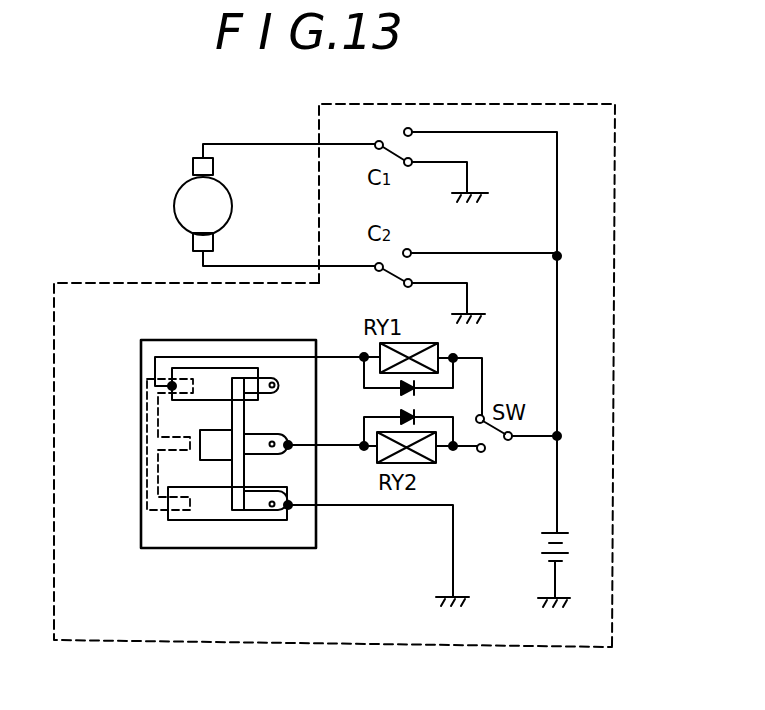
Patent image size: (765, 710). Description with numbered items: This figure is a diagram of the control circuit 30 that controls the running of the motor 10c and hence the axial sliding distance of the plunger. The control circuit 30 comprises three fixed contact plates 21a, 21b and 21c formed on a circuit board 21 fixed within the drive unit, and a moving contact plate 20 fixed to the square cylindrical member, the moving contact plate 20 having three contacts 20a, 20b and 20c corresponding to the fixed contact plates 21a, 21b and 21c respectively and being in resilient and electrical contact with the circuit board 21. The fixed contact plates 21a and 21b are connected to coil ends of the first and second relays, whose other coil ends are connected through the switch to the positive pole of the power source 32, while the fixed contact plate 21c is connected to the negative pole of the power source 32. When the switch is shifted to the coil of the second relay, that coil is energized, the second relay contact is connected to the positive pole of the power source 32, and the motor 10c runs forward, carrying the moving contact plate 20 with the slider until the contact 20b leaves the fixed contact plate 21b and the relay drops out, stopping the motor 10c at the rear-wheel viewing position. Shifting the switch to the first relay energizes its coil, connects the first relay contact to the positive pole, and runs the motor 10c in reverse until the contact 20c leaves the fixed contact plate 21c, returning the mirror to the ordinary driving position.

The motor 10c is at (174, 208).
The control circuit 30 is at (615, 221).
The power source 32 is at (568, 540).
The moving contact plate 20 is at (234, 512).
The contact 20a is at (147, 478).
The contact 20b is at (275, 441).
The contact 20c is at (272, 381).
The circuit board 21 is at (258, 552).
The fixed contact plate 21a is at (187, 522).
The fixed contact plate 21b is at (207, 443).
The fixed contact plate 21c is at (195, 375).